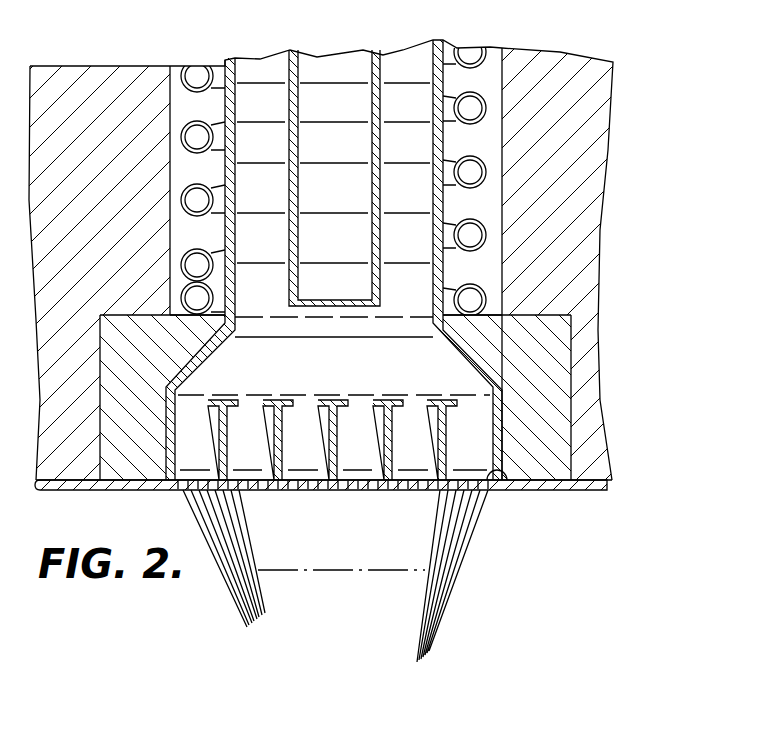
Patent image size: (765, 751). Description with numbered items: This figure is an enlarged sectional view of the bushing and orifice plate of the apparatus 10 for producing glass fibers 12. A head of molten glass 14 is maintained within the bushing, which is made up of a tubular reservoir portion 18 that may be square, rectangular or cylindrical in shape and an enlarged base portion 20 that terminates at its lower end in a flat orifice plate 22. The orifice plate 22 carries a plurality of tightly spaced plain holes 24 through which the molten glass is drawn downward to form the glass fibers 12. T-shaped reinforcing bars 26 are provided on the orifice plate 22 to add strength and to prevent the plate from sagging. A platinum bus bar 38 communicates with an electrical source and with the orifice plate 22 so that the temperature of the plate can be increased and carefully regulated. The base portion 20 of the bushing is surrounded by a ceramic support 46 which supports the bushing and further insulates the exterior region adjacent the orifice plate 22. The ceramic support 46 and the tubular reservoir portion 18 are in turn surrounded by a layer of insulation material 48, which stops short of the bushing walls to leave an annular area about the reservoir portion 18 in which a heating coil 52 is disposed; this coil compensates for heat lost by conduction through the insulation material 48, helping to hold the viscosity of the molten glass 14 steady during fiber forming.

The apparatus 10 is at (447, 35).
The glass fibers 12 is at (452, 570).
The head of molten glass 14 is at (412, 58).
The tubular reservoir portion 18 is at (443, 143).
The enlarged base portion 20 is at (497, 405).
The orifice plate 22 is at (503, 487).
The plain holes 24 is at (258, 491).
The T-shaped reinforcing bars 26 is at (420, 447).
The platinum bus bar 38 is at (612, 492).
The ceramic support 46 is at (552, 344).
The insulation material 48 is at (575, 210).
The heating coil 52 is at (469, 172).